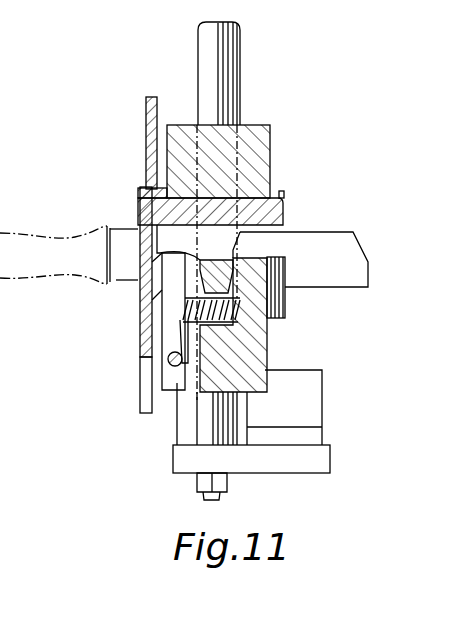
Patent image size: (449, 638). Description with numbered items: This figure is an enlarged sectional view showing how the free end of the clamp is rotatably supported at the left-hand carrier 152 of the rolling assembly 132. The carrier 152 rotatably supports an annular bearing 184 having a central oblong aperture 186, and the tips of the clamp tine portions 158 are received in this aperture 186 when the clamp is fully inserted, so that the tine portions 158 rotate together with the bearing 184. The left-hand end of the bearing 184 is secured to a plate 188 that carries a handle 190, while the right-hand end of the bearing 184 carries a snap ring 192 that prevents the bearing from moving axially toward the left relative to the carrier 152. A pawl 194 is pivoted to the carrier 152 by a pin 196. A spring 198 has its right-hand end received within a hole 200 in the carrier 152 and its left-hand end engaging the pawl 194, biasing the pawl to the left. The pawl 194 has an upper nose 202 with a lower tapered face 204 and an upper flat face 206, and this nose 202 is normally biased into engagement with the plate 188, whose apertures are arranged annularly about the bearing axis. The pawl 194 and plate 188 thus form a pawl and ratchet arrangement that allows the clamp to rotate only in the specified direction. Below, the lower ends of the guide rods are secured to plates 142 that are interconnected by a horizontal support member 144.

The rolling assembly 132 is at (196, 72).
The carrier 152 is at (262, 142).
The plate 188 is at (146, 130).
The central oblong aperture 186 is at (148, 190).
The annular bearing 184 is at (260, 195).
The snap ring 192 is at (285, 194).
The handle 190 is at (3, 225).
The upper nose 202 is at (140, 257).
The upper flat face 206 is at (157, 250).
The pawl 194 is at (176, 300).
The lower tapered face 204 is at (162, 295).
The pin 196 is at (173, 367).
The spring 198 is at (233, 290).
The hole 200 is at (235, 318).
The tine portions 158 is at (318, 243).
The plates 142 is at (312, 462).
The horizontal support member 144 is at (278, 438).